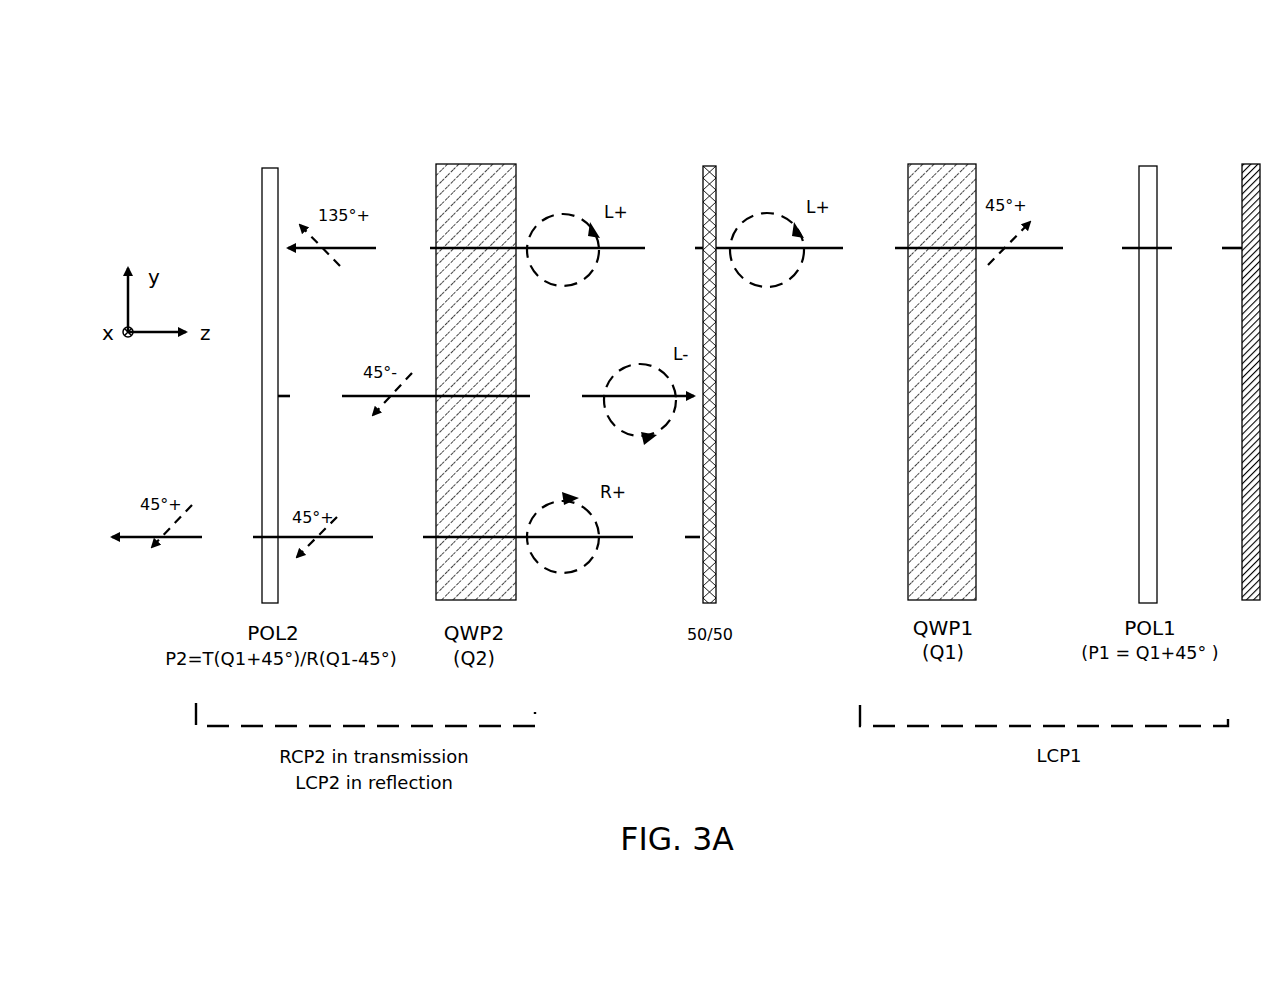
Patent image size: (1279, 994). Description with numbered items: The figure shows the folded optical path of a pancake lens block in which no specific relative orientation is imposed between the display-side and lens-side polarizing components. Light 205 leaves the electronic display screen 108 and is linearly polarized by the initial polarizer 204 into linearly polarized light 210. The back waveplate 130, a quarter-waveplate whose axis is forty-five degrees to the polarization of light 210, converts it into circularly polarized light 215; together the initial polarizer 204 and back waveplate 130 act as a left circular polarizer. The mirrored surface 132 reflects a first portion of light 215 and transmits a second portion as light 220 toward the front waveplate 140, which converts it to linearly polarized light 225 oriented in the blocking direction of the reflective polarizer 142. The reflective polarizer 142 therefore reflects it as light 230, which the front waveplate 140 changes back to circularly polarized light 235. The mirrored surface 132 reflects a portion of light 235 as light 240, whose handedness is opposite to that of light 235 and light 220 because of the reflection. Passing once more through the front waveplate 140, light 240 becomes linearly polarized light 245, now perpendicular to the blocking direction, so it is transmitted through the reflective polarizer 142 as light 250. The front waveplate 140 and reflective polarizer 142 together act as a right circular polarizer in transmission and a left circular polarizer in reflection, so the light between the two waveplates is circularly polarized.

The reflective polarizer 142 is at (262, 190).
The front waveplate 140 is at (469, 164).
The mirrored surface 132 is at (703, 207).
The back waveplate 130 is at (930, 164).
The initial polarizer 204 is at (1139, 177).
The electronic display screen 108 is at (1242, 188).
The light 205 is at (1182, 248).
The linearly polarized light 210 is at (1004, 248).
The circularly polarized light 215 is at (800, 248).
The transmitted light 220 is at (566, 248).
The linearly polarized light 225 is at (354, 248).
The reflected light 230 is at (404, 396).
The circularly polarized light 235 is at (615, 396).
The reflected light 240 is at (561, 537).
The linearly polarized light 245 is at (336, 537).
The transmitted light 250 is at (179, 537).